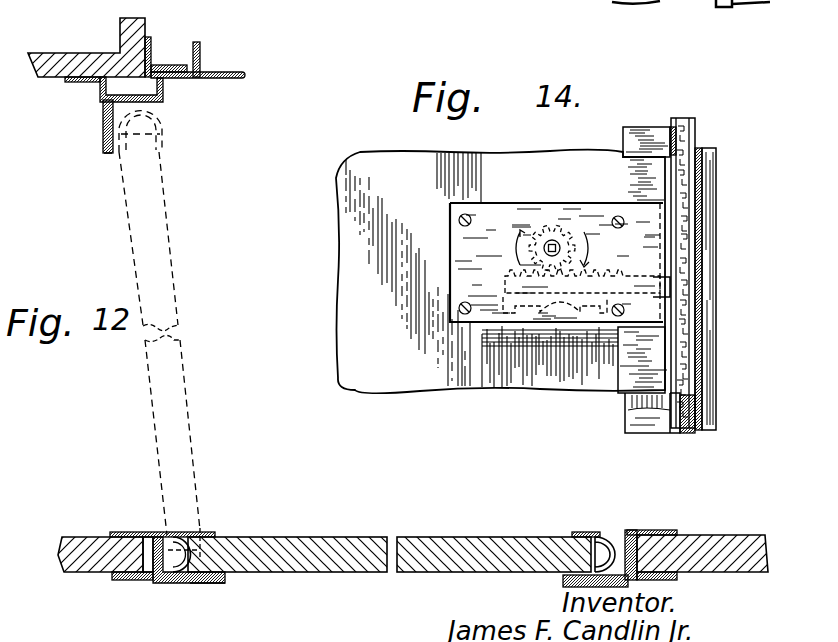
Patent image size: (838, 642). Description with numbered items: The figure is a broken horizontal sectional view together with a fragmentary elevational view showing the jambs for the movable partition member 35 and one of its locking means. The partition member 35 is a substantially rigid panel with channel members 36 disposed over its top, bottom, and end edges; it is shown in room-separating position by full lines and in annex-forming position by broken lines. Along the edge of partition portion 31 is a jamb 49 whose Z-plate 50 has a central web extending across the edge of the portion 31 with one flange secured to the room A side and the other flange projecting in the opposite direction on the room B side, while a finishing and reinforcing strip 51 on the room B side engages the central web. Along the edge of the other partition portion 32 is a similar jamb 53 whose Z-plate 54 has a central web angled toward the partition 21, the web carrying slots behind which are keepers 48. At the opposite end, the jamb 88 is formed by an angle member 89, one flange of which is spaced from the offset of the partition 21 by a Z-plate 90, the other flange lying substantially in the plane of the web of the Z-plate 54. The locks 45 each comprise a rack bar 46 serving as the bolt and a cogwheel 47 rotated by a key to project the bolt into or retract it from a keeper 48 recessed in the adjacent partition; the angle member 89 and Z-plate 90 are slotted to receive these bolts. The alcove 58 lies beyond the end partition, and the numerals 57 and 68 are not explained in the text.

In FIG. 12, the partition 21 is at (54, 53).
In FIG. 12, the partition portion 31 is at (694, 535).
In FIG. 12, the partition portion 32 is at (82, 571).
In FIG. 12, the partition member 35 is at (168, 230).
In FIG. 14, the partition member 35 is at (400, 268).
In FIG. 12, the channel members 36 is at (185, 535).
In FIG. 14, the channel members 36 is at (620, 356).
In FIG. 14, the locks 45 is at (494, 201).
In FIG. 14, the rack bar 46 is at (610, 272).
In FIG. 14, the cogwheel 47 is at (556, 225).
In FIG. 14, the keeper 48 is at (702, 240).
In FIG. 12, the jamb 49 is at (575, 588).
In FIG. 12, the Z-plate 50 is at (630, 530).
In FIG. 12, the finishing and reinforcing strip 51 is at (128, 581).
In FIG. 12, the jamb 53 is at (205, 584).
In FIG. 12, the Z-plate 54 is at (156, 534).
In FIG. 12, the plate 57 is at (680, 580).
In FIG. 12, the alcove 58 is at (106, 136).
In FIG. 14, the alcove 58 is at (623, 142).
In FIG. 12, the plate 68 is at (228, 79).
In FIG. 14, the plate 68 is at (704, 360).
In FIG. 12, the jamb 88 is at (95, 121).
In FIG. 12, the angle member 89 is at (160, 102).
In FIG. 14, the angle member 89 is at (672, 126).
In FIG. 12, the Z-plate 90 is at (100, 90).
In FIG. 14, the Z-plate 90 is at (688, 118).